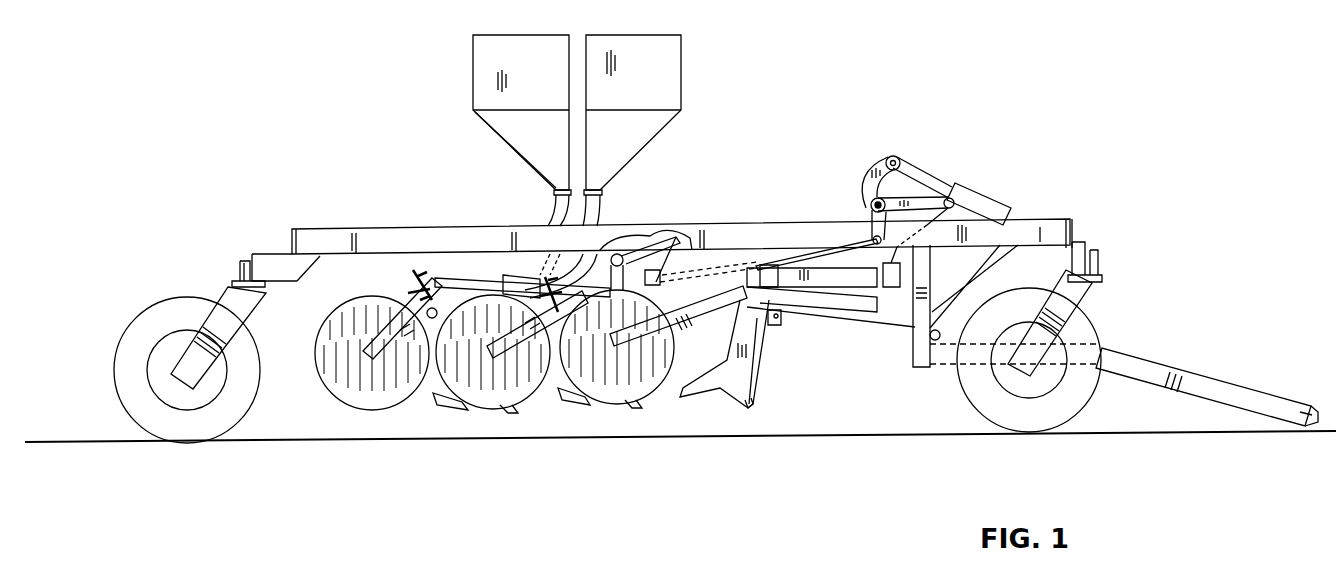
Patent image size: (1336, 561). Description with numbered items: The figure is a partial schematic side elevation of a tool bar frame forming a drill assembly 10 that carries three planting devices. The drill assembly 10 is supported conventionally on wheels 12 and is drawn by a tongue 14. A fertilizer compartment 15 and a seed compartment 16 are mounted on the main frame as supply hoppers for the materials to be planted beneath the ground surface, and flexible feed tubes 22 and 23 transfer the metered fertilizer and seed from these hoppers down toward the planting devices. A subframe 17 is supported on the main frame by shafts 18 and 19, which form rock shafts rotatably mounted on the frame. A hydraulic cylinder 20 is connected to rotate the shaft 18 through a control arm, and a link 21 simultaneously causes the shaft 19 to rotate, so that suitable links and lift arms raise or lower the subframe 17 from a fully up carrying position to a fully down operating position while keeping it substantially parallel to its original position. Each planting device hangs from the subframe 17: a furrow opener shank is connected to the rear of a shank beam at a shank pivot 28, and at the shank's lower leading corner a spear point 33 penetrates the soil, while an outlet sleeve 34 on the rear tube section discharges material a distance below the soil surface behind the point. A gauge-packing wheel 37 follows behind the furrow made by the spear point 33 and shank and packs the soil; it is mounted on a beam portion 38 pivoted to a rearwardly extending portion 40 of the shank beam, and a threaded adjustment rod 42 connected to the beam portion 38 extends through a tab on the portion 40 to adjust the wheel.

The drill assembly 10 is at (1053, 223).
The wheels 12 is at (162, 310).
The tongue 14 is at (1230, 392).
The fertilizer compartment 15 is at (518, 145).
The seed compartment 16 is at (668, 78).
The subframe 17 is at (818, 272).
The shaft 18 is at (865, 202).
The shaft 19 is at (610, 262).
The hydraulic cylinder 20 is at (973, 188).
The link 21 is at (786, 258).
The flexible feed tube 22 is at (555, 203).
The flexible feed tube 23 is at (600, 201).
The shank pivot 28 is at (775, 322).
The spear point 33 is at (752, 408).
The outlet sleeve 34 is at (680, 395).
The gauge-packing wheel 37 is at (593, 400).
The beam portion 38 is at (494, 351).
The rearwardly extending portion 40 is at (435, 296).
The threaded adjustment rod 42 is at (415, 282).